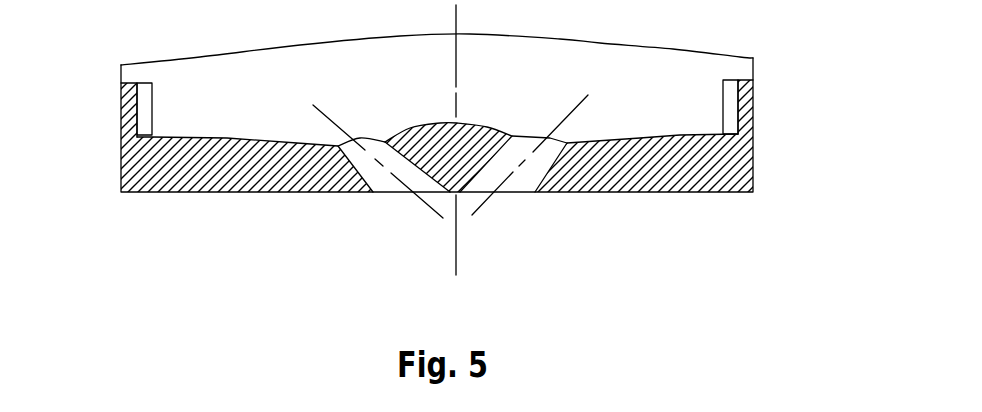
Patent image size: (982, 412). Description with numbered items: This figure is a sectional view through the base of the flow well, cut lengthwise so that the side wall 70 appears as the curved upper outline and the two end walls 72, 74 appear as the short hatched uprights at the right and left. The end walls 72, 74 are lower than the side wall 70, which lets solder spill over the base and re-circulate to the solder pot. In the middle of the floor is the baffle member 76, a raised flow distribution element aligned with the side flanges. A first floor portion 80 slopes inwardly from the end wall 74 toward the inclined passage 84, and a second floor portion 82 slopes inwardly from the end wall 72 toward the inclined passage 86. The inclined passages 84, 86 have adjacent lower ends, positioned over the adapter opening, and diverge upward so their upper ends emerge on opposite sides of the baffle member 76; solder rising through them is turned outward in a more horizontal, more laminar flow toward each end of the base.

The side wall 70 is at (683, 72).
The end wall 72 is at (753, 135).
The end wall 74 is at (120, 135).
The baffle member 76 is at (466, 124).
The first floor portion 80 is at (212, 183).
The second floor portion 82 is at (653, 182).
The inclined passage 84 is at (390, 185).
The inclined passage 86 is at (515, 183).